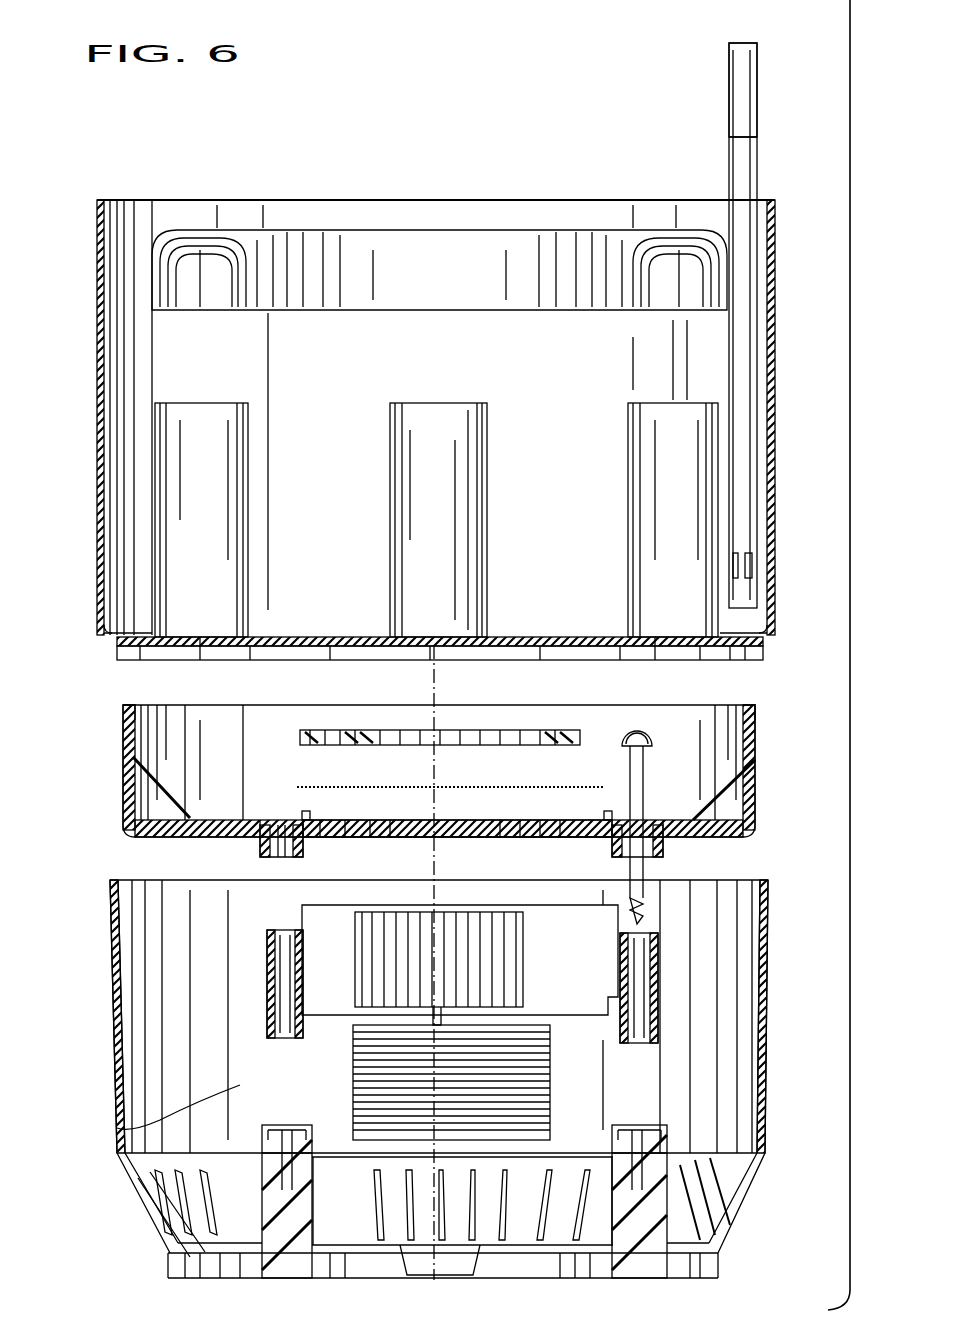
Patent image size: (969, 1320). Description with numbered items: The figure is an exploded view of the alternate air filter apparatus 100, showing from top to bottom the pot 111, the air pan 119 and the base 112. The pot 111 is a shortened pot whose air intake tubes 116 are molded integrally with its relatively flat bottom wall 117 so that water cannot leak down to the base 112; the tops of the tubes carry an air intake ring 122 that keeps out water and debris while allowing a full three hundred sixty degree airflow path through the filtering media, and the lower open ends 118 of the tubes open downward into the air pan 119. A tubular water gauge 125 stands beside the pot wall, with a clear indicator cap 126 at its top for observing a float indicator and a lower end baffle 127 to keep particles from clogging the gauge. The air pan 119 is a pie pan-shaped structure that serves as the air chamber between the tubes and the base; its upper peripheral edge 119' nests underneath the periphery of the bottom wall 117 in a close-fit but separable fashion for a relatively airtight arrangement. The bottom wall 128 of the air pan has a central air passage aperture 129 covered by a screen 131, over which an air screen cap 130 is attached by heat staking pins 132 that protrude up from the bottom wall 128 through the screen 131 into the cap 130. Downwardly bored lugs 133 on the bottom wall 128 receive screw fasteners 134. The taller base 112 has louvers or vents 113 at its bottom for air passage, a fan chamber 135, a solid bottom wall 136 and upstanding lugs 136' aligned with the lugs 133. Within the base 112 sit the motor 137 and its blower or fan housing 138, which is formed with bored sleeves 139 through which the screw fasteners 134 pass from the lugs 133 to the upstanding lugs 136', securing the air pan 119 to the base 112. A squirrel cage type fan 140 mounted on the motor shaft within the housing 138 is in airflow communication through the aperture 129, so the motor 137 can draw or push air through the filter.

The air filter apparatus 100 is at (856, 620).
The pot 111 is at (97, 382).
The base 112 is at (117, 1028).
The louvers or vents 113 is at (215, 1215).
The air intake tubes 116 is at (248, 495).
The bottom wall 117 is at (288, 637).
The lower open ends 118 is at (212, 652).
The air pan 119 is at (402, 771).
The upper peripheral edge 119' is at (432, 692).
The air intake ring 122 is at (468, 282).
The tubular water gauge 125 is at (740, 166).
The clear indicator cap 126 is at (741, 78).
The lower end baffle 127 is at (750, 560).
The bottom wall 128 is at (246, 818).
The central air passage aperture 129 is at (460, 837).
The air screen cap 130 is at (485, 746).
The screen 131 is at (378, 787).
The heat staking pins 132 is at (310, 813).
The downwardly bored lugs 133 is at (262, 852).
The screw fasteners 134 is at (637, 735).
The fan chamber 135 is at (117, 1128).
The solid bottom wall 136 is at (464, 1235).
The upstanding lugs 136' is at (464, 1201).
The motor 137 is at (550, 1082).
The fan housing 138 is at (332, 1015).
The bored sleeves 139 is at (268, 950).
The squirrel cage type fan 140 is at (495, 930).